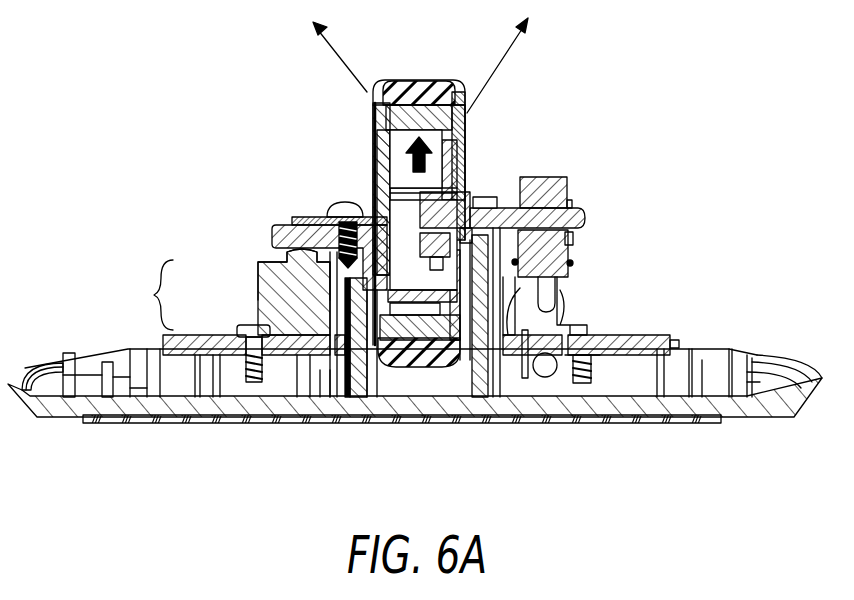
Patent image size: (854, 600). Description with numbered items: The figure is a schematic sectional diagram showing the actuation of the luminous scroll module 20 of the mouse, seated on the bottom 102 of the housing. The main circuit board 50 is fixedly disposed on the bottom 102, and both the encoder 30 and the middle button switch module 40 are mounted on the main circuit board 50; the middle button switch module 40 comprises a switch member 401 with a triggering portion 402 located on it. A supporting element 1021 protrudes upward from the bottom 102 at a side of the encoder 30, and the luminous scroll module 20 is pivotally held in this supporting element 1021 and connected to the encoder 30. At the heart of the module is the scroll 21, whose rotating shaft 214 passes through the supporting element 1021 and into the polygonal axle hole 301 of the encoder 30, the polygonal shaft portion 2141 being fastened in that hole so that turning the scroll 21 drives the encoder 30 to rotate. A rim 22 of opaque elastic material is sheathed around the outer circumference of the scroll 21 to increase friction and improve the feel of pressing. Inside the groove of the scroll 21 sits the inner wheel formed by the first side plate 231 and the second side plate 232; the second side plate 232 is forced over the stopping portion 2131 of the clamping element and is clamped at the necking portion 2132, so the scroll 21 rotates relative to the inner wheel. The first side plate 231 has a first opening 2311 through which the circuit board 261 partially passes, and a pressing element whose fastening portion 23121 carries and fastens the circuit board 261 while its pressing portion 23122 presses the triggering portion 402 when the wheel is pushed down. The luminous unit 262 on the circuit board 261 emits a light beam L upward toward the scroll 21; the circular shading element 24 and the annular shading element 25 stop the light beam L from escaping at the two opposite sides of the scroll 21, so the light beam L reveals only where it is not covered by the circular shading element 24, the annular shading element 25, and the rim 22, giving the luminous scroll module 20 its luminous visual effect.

The bottom 102 is at (612, 403).
The supporting element 1021 is at (485, 305).
The luminous scroll module 20 is at (418, 252).
The scroll 21 is at (457, 83).
The rim 22 is at (417, 80).
The circular shading element 24 is at (467, 115).
The annular shading element 25 is at (373, 107).
The first side plate 231 is at (373, 132).
The first opening 2311 is at (373, 197).
The second side plate 232 is at (467, 147).
The fastening portion 23121 is at (368, 388).
The pressing portion 23122 is at (270, 237).
The stopping portion 2131 is at (425, 385).
The necking portion 2132 is at (479, 397).
The rotating shaft 214 is at (545, 195).
The polygonal shaft portion 2141 is at (503, 197).
The circuit board 261 is at (292, 220).
The luminous unit 262 is at (340, 202).
The encoder 30 is at (553, 177).
The polygonal axle hole 301 is at (572, 210).
The middle button switch module 40 is at (146, 295).
The switch member 401 is at (258, 308).
The triggering portion 402 is at (262, 258).
The main circuit board 50 is at (667, 335).
The light beam L is at (327, 42).